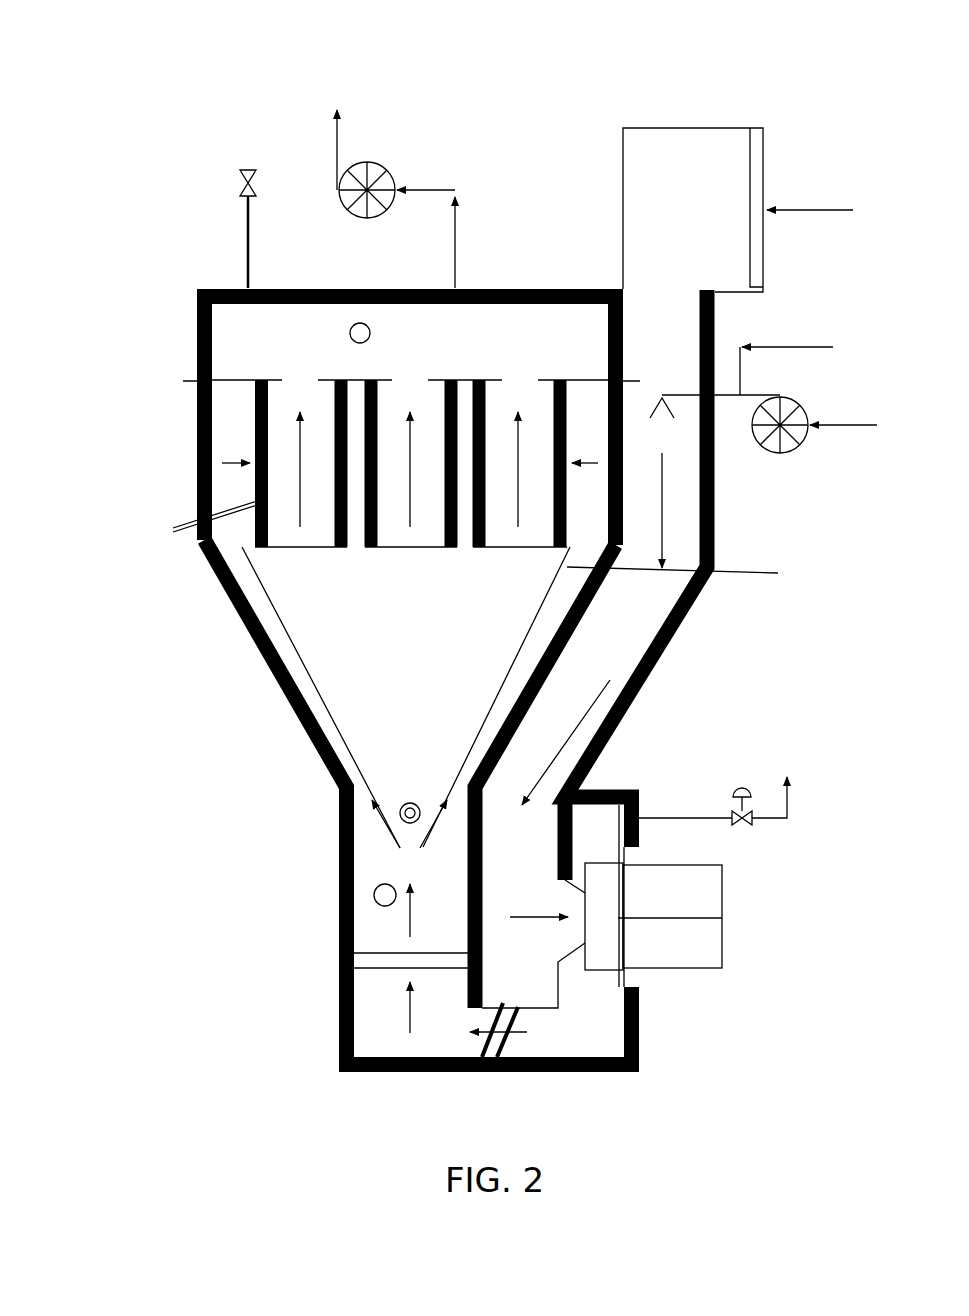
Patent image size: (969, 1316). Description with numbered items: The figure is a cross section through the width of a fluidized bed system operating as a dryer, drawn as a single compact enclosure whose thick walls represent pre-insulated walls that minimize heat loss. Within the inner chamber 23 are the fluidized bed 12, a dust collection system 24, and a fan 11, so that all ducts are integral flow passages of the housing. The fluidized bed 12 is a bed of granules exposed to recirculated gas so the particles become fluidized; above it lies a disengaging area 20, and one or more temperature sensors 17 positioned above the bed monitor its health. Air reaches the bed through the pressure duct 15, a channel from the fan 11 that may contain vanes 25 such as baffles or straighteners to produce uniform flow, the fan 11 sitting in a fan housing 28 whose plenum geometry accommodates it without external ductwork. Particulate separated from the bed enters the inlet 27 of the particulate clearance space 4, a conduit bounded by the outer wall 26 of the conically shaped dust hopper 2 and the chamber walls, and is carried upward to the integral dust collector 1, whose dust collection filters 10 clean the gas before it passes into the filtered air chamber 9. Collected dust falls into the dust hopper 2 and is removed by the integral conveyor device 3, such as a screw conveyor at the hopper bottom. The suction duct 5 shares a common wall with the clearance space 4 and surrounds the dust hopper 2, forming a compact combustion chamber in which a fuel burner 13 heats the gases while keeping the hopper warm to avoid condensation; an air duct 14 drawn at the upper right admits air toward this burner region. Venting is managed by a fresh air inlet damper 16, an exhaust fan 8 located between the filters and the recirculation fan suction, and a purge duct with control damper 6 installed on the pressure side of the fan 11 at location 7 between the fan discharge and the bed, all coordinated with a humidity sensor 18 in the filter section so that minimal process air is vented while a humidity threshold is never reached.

The integral dust collector 1 is at (178, 540).
The dust hopper 2 is at (318, 667).
The integral conveyor device 3 is at (397, 818).
The particulate clearance space 4 is at (363, 705).
The suction duct 5 is at (728, 591).
The control damper 6 is at (753, 827).
The location 7 is at (595, 833).
The exhaust fan 8 is at (378, 162).
The filtered air chamber 9 is at (472, 343).
The dust collection filters 10 is at (168, 432).
The fan 11 is at (602, 953).
The fluidized bed 12 is at (420, 953).
The fuel burner 13 is at (800, 446).
The air duct 14 is at (763, 165).
The pressure duct 15 is at (563, 1027).
The fresh air inlet damper 16 is at (245, 178).
The temperature sensor 17 is at (374, 902).
The humidity sensor 18 is at (355, 324).
The disengaging area 20 is at (385, 923).
The inner chamber 23 is at (607, 682).
The dust collection system 24 is at (248, 577).
The vanes 25 is at (480, 1047).
The outer wall 26 is at (697, 575).
The inlet 27 is at (357, 777).
The fan housing 28 is at (607, 863).